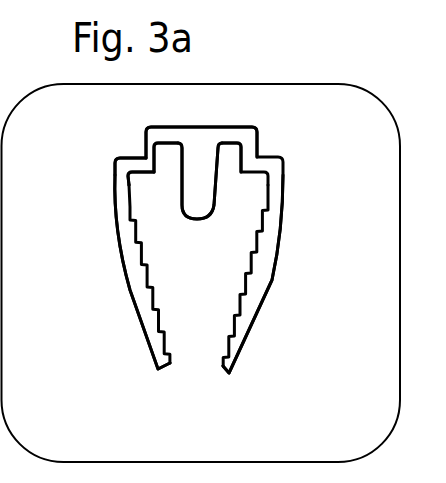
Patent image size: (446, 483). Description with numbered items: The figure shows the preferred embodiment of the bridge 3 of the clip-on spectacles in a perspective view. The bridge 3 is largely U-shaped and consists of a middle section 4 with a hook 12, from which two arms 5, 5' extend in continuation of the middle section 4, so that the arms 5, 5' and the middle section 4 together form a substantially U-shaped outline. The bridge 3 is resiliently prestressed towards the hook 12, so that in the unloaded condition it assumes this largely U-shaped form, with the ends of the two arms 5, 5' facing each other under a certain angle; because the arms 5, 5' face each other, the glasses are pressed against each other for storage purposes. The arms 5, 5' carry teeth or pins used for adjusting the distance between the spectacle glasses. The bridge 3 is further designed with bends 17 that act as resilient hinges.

The bridge 3 is at (279, 139).
The middle section 4 is at (172, 123).
The bends 17 is at (143, 158).
The hook 12 is at (198, 222).
The arm 5 is at (115, 272).
The arm 5' is at (276, 274).